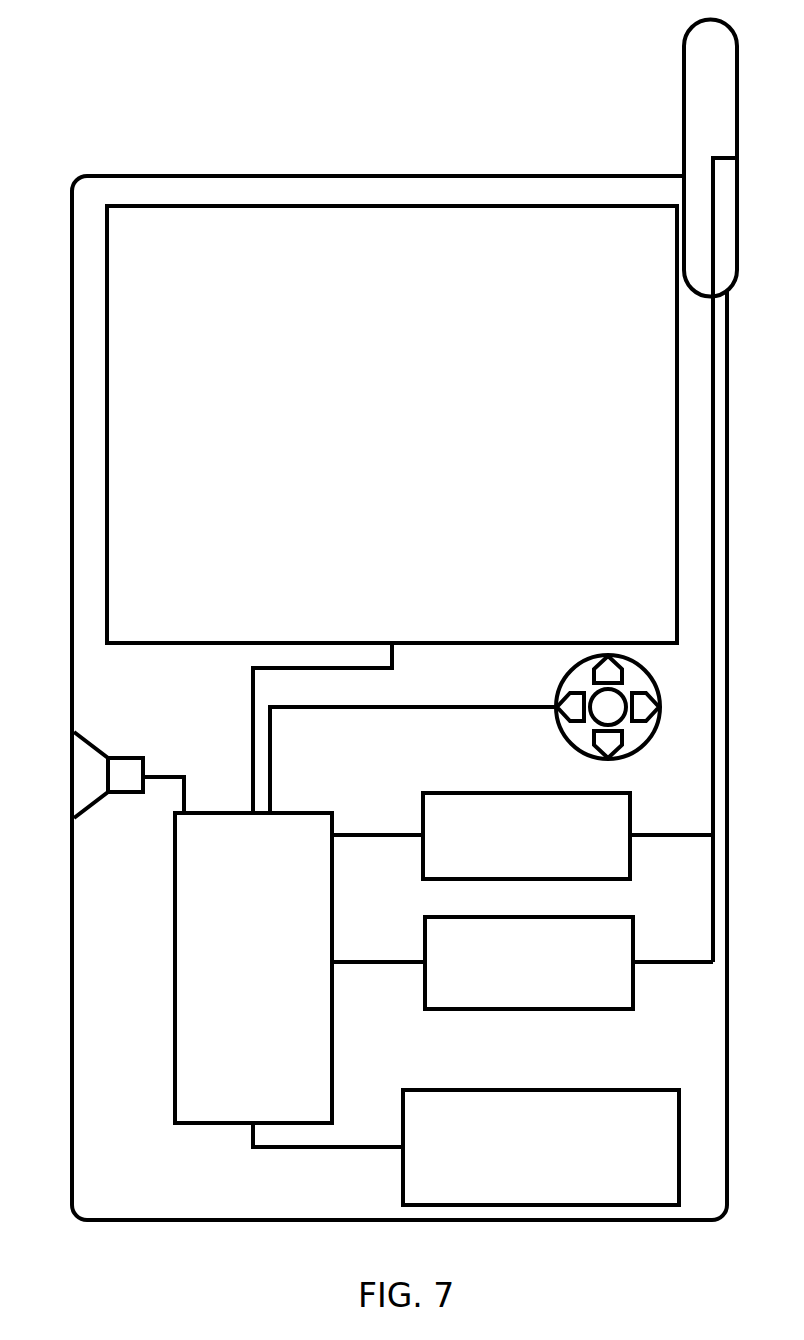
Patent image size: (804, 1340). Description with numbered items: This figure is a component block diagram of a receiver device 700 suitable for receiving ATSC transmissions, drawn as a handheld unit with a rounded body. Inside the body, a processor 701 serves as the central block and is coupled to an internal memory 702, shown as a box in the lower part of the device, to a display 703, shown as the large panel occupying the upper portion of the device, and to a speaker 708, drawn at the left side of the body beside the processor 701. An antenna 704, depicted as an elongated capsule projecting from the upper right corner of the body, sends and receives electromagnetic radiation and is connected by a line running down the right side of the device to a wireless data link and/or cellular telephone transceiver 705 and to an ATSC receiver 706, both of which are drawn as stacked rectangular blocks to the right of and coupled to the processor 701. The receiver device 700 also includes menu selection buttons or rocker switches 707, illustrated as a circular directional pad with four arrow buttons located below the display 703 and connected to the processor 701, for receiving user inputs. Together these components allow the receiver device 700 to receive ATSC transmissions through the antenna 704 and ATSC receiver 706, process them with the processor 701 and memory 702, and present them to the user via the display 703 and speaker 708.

The receiver device 700 is at (347, 175).
The processor 701 is at (365, 895).
The internal memory 702 is at (541, 1147).
The display 703 is at (392, 424).
The antenna 704 is at (684, 50).
The cellular telephone transceiver 705 is at (568, 836).
The ATSC receiver 706 is at (569, 963).
The rocker switches 707 is at (625, 757).
The speaker 708 is at (145, 766).